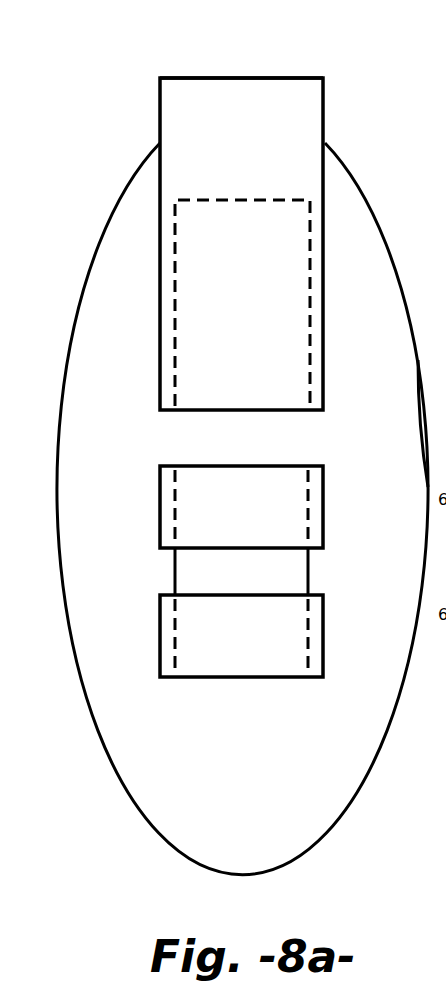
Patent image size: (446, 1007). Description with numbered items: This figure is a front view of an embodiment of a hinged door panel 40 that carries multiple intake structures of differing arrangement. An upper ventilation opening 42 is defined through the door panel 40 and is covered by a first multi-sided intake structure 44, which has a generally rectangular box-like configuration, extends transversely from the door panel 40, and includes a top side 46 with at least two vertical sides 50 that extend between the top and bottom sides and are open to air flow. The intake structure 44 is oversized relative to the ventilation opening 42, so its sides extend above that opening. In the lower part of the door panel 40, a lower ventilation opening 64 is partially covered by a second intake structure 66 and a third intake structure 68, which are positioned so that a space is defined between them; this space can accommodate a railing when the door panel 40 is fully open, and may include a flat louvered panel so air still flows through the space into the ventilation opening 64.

The door panel 40 is at (90, 425).
The ventilation opening 42 is at (243, 200).
The multi-sided intake structure 44 is at (346, 133).
The top side 46 is at (243, 78).
The vertical sides 50 is at (428, 414).
The lower ventilation opening 64 is at (175, 513).
The second intake structure 66 is at (337, 500).
The third intake structure 68 is at (325, 633).